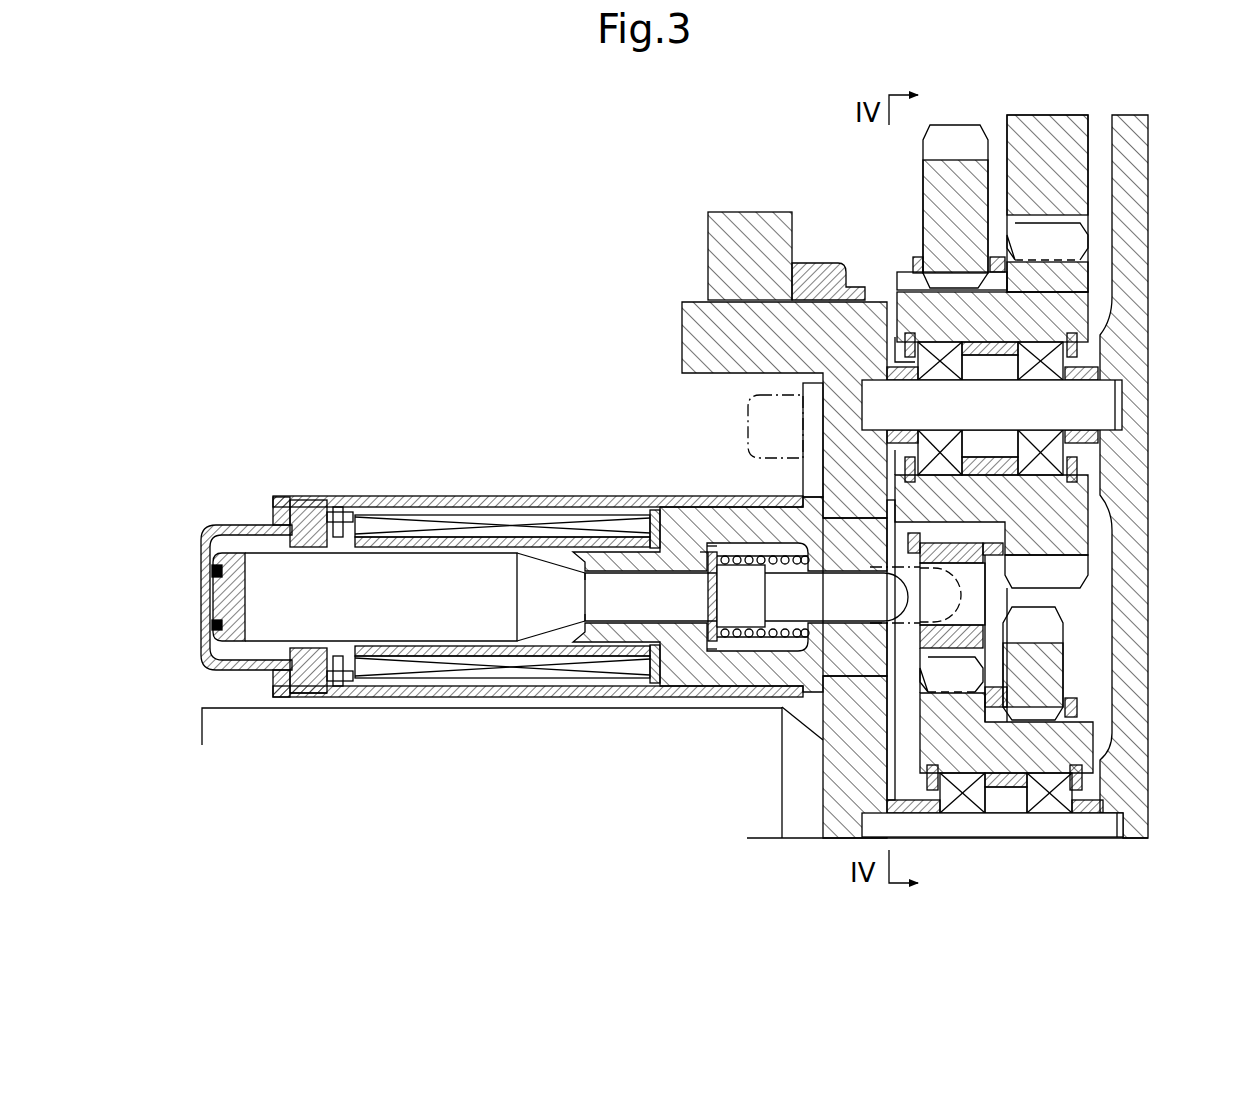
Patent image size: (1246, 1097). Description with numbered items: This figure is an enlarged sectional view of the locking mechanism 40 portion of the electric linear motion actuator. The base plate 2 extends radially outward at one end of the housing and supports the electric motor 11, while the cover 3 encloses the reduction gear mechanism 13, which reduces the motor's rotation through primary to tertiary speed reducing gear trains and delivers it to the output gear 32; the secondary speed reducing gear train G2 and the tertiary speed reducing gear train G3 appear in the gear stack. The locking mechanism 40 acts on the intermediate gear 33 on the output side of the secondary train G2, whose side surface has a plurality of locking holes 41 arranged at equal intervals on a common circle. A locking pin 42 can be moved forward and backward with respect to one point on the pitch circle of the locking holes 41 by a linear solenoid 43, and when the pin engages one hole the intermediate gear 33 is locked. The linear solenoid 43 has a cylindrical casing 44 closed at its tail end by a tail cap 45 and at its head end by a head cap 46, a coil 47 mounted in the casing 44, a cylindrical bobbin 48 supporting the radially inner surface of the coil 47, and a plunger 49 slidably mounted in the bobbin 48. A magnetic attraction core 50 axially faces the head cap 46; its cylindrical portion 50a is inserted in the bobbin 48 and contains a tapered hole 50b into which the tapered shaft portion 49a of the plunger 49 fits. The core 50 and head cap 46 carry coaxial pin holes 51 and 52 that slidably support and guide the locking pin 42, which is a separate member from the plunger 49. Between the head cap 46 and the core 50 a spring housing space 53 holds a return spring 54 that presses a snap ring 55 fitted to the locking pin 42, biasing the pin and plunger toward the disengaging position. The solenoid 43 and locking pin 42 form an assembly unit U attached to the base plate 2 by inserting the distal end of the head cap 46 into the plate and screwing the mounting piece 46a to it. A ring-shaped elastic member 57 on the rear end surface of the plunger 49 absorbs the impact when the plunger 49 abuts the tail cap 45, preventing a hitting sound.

The base plate 2 is at (838, 783).
The cover 3 is at (1142, 135).
The electric motor 11 is at (205, 740).
The reduction gear mechanism 13 is at (1096, 151).
The output gear 32 is at (1062, 177).
The intermediate gear 33 is at (1005, 545).
The locking mechanism 40 is at (483, 487).
The locking holes 41 is at (975, 597).
The locking pin 42 is at (760, 648).
The linear solenoid 43 is at (340, 494).
The cylindrical casing 44 is at (413, 497).
The tail cap 45 is at (215, 527).
The head cap 46 is at (772, 495).
The mounting piece 46a is at (806, 495).
The coil 47 is at (532, 520).
The cylindrical bobbin 48 is at (581, 522).
The plunger 49 is at (395, 627).
The tapered shaft portion 49a is at (530, 617).
The magnetic attraction core 50 is at (703, 640).
The cylindrical portion 50a is at (623, 630).
The tapered hole 50b is at (582, 622).
The pin hole 51 is at (712, 617).
The pin hole 52 is at (782, 614).
The spring housing space 53 is at (705, 530).
The return spring 54 is at (716, 548).
The snap ring 55 is at (703, 548).
The ring-shaped elastic member 57 is at (213, 573).
The secondary speed reducing gear train G2 is at (991, 635).
The tertiary speed reducing gear train G3 is at (1091, 241).
The assembly unit U is at (333, 700).